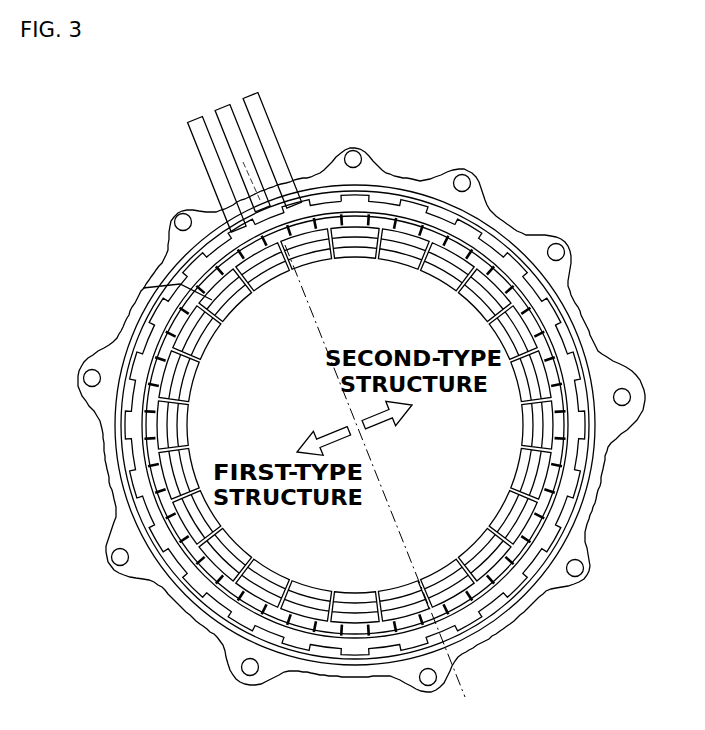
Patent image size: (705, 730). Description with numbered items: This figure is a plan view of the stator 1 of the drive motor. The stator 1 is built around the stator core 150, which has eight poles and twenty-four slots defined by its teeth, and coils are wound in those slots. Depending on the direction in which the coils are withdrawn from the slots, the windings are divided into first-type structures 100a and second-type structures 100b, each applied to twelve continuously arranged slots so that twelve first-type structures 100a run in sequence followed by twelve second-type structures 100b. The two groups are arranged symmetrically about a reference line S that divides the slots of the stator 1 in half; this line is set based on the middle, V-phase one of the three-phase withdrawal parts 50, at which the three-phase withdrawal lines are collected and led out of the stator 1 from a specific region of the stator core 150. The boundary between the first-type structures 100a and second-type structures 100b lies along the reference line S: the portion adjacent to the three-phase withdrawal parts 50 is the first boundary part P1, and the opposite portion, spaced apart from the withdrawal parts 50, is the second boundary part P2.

The stator 1 is at (609, 218).
The three-phase withdrawal part 50 is at (296, 119).
The first-type structure 100a is at (143, 473).
The second-type structure 100b is at (548, 360).
The stator core 150 is at (583, 410).
The first boundary part P1 is at (294, 281).
The second boundary part P2 is at (413, 562).
The reference line S is at (379, 480).